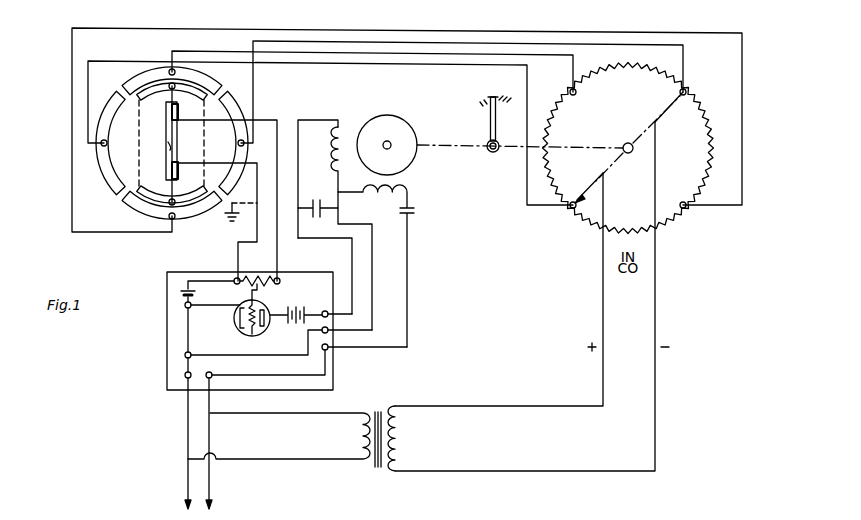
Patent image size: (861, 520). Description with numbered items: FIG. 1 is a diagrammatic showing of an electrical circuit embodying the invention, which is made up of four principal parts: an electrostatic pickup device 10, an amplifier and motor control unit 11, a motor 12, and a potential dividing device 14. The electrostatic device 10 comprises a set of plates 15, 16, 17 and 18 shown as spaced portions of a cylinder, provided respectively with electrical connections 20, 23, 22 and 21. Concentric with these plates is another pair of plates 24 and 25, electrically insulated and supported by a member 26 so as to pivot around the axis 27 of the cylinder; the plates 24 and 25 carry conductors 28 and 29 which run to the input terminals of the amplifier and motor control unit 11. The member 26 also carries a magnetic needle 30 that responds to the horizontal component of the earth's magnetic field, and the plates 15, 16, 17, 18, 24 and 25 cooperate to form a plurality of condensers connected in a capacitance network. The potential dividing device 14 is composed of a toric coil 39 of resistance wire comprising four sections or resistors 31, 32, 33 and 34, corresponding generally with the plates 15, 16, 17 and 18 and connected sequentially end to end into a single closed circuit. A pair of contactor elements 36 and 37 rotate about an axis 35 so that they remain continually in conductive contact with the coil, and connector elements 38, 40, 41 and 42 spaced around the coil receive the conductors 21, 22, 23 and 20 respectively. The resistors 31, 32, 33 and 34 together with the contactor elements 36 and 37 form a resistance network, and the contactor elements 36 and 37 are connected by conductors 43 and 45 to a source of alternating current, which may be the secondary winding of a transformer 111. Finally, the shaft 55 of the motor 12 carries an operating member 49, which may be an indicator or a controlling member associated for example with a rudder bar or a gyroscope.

The electrostatic pickup device 10 is at (70, 112).
The amplifier and motor control unit 11 is at (165, 333).
The motor 12 is at (387, 114).
The potential dividing device 14 is at (746, 113).
The plate 15 is at (229, 206).
The plate 16 is at (118, 184).
The plate 17 is at (133, 86).
The plate 18 is at (222, 95).
The electrical connection 20 is at (122, 232).
The electrical connection 21 is at (254, 80).
The electrical connection 22 is at (172, 50).
The electrical connection 23 is at (88, 61).
The plate 24 is at (140, 103).
The plate 25 is at (149, 188).
The member 26 is at (139, 144).
The axis 27 is at (168, 147).
The conductor 28 is at (181, 117).
The conductor 29 is at (182, 166).
The magnetic needle 30 is at (178, 129).
The resistor 31 is at (710, 150).
The resistor 32 is at (653, 67).
The resistor 33 is at (556, 112).
The resistor 34 is at (617, 227).
The axis 35 is at (628, 142).
The contactor element 36 is at (590, 184).
The contactor element 37 is at (669, 115).
The connector element 38 is at (686, 92).
The toric coil 39 is at (593, 227).
The connector element 40 is at (570, 92).
The connector element 41 is at (571, 208).
The connector element 42 is at (683, 208).
The conductor 43 is at (530, 406).
The conductor 45 is at (530, 471).
The operating member 49 is at (487, 106).
The shaft 55 is at (437, 141).
The transformer 111 is at (376, 470).